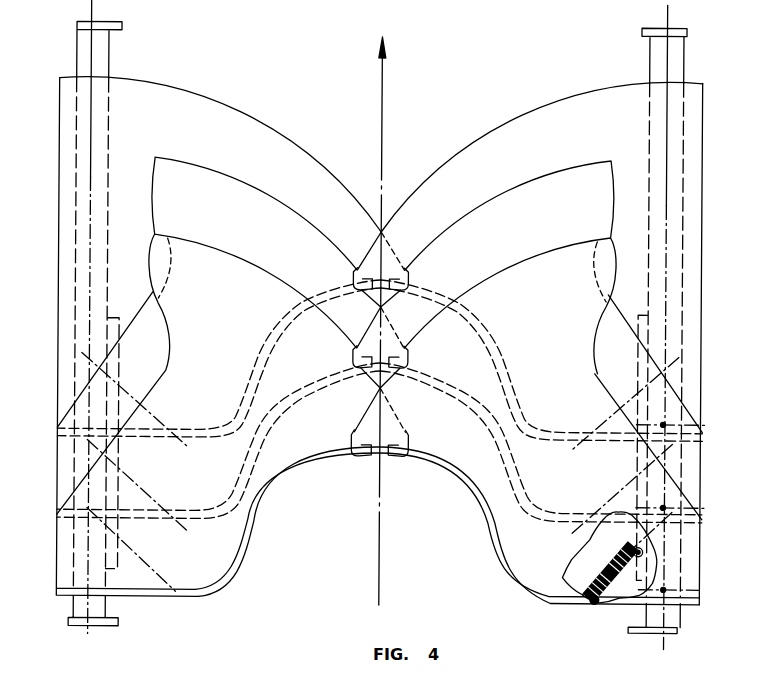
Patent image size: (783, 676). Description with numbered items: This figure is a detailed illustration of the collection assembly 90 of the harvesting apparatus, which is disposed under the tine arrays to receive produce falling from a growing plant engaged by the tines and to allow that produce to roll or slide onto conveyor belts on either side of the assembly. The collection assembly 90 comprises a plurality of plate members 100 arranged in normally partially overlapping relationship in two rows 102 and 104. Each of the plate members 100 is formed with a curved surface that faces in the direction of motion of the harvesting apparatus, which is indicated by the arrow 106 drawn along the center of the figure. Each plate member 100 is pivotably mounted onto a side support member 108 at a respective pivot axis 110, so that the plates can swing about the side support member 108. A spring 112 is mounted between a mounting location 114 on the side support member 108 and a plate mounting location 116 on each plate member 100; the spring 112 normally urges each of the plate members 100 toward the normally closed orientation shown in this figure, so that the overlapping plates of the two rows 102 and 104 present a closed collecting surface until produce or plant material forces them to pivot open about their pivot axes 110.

The collection assembly 90 is at (318, 105).
The plate members 100 is at (322, 184).
The row 102 is at (517, 138).
The row 104 is at (224, 94).
The arrow 106 is at (382, 86).
The side support member 108 is at (94, 154).
The pivot axis 110 is at (664, 422).
The spring 112 is at (598, 563).
The mounting location 114 is at (643, 551).
The plate mounting location 116 is at (598, 603).